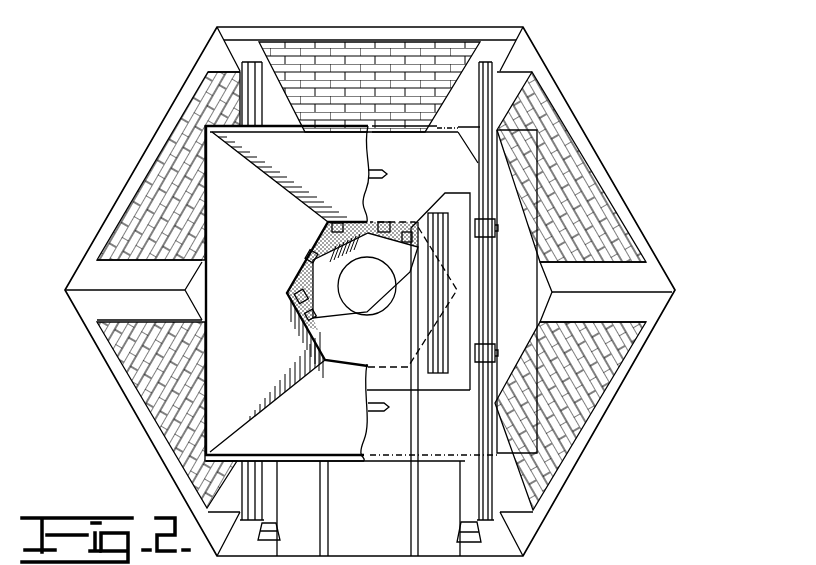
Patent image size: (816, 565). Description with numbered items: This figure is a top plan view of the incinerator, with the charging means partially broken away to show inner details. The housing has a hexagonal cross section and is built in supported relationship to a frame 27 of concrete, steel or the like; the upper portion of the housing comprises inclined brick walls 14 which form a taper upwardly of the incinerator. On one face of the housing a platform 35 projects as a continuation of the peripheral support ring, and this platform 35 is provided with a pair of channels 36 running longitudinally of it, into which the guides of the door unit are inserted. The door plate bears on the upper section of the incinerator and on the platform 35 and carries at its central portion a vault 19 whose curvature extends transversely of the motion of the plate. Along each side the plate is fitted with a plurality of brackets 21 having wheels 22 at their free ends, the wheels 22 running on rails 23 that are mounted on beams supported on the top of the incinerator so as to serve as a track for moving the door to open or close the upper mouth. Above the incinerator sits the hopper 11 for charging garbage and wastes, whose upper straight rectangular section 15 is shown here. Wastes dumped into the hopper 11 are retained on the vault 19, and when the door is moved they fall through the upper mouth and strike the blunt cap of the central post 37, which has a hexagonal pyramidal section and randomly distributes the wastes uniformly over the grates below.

The hopper 11 is at (196, 360).
The inclined walls 14 is at (578, 212).
The upper straight rectangular section 15 is at (203, 184).
The vault 19 is at (385, 337).
The brackets 21 is at (468, 207).
The wheels 22 is at (494, 352).
The rails 23 is at (482, 412).
The frame 27 is at (638, 278).
The platform 35 is at (436, 537).
The channels 36 is at (410, 497).
The post 37 is at (367, 255).